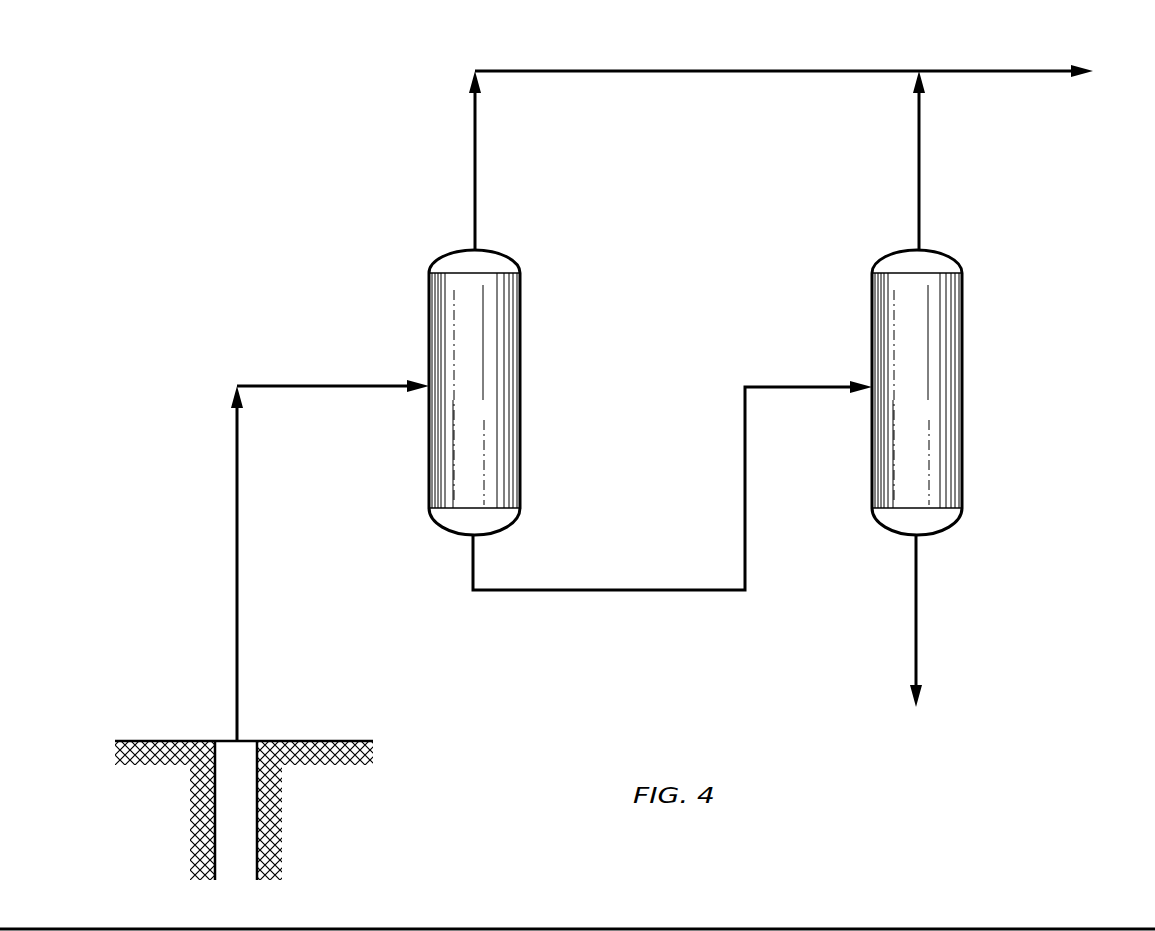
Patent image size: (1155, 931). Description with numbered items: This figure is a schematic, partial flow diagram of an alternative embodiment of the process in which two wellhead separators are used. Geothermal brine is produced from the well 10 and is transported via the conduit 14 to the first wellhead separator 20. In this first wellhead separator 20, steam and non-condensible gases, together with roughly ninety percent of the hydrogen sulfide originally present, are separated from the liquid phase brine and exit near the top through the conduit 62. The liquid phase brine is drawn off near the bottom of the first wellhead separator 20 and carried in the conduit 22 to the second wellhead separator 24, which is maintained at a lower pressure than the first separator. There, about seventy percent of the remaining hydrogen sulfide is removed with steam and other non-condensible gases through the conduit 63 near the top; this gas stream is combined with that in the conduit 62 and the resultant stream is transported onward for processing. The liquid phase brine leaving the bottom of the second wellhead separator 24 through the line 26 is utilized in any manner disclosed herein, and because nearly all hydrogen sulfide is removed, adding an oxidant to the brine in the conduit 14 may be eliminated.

The well 10 is at (243, 812).
The conduit 14 is at (238, 576).
The first wellhead separator 20 is at (498, 430).
The conduit 22 is at (618, 570).
The second wellhead separator 24 is at (942, 437).
The liquid outlet line 26 is at (918, 601).
The conduit 62 is at (476, 172).
The conduit 63 is at (920, 173).